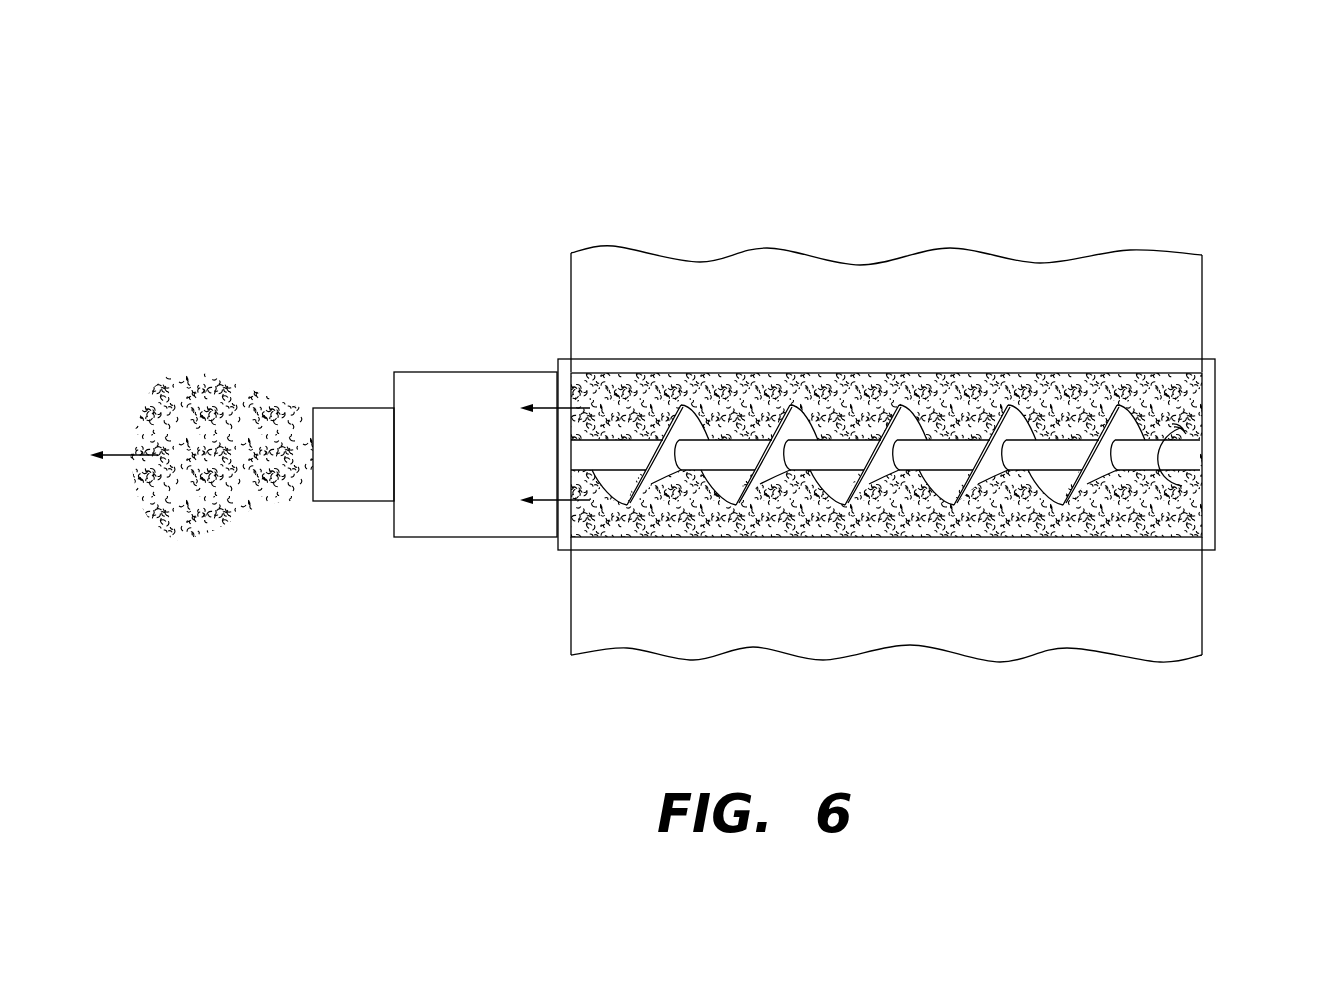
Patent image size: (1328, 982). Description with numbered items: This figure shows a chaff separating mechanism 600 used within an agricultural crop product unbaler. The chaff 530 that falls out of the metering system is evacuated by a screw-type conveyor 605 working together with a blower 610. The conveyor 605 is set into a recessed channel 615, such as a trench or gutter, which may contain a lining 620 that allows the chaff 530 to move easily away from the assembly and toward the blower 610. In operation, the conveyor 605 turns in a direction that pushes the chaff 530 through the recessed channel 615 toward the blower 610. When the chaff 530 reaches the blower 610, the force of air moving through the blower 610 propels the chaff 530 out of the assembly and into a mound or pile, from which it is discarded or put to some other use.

The chaff separating mechanism 600 is at (699, 358).
The blower 610 is at (474, 387).
The recessed channel 615 is at (739, 375).
The lining 620 is at (872, 378).
The screw-type conveyor 605 is at (1011, 408).
The chaff 530 is at (1188, 398).